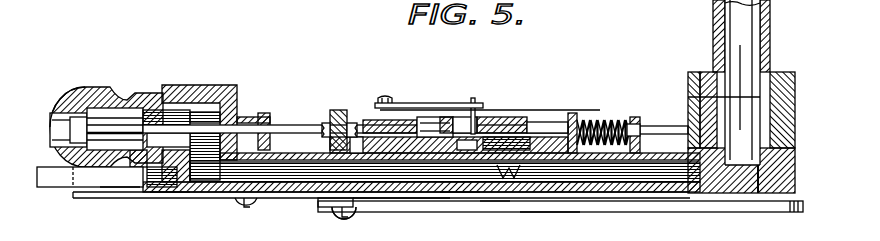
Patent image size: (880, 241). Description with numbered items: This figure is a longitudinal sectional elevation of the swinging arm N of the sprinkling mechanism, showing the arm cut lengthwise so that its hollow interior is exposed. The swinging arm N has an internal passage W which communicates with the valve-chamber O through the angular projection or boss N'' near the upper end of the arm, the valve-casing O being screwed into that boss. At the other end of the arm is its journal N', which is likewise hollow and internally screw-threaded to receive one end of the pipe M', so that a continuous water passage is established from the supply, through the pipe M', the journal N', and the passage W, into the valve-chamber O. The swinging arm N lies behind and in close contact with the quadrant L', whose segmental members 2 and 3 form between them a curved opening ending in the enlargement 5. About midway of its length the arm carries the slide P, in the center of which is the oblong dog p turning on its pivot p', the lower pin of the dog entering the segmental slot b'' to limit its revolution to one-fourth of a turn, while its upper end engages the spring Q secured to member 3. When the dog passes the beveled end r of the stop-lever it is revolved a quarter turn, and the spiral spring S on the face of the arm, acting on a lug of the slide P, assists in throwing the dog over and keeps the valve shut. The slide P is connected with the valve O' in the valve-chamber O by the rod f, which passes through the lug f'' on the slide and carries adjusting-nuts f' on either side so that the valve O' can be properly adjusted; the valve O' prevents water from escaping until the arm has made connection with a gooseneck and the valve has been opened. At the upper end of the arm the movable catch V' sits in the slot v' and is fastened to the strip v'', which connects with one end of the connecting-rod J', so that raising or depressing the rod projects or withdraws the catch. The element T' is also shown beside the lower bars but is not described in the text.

The valve-casing O is at (106, 115).
The valve O' is at (74, 94).
The angular projection or boss N'' is at (216, 110).
The rod f is at (355, 117).
The nut f' is at (336, 116).
The lug f'' is at (349, 104).
The upper segmental member 3 is at (370, 137).
The slide P is at (476, 147).
The enlargement 5 is at (427, 117).
The segmental member 2 is at (510, 117).
The oblong dog p is at (468, 107).
The lever P'' is at (490, 93).
The spring Q is at (418, 103).
The spiral spring S is at (600, 120).
The beveled end r is at (573, 113).
The quadrant L' is at (691, 110).
The journal N' is at (754, 132).
The pipe M' is at (728, 96).
The movable catch V' is at (90, 193).
The strip v'' is at (120, 208).
The slot v' is at (170, 206).
The roller T' is at (343, 223).
The pivot p' is at (401, 219).
The swinging arm N is at (460, 216).
The segmental slot b'' is at (495, 220).
The connecting-rod J' is at (550, 217).
The internal passage W is at (508, 171).